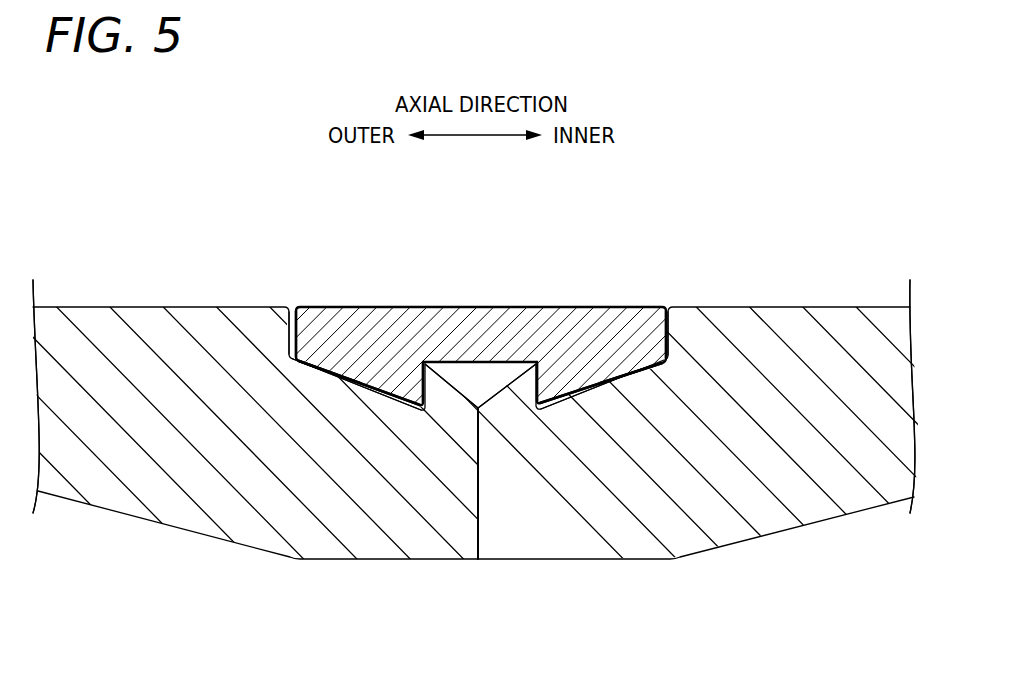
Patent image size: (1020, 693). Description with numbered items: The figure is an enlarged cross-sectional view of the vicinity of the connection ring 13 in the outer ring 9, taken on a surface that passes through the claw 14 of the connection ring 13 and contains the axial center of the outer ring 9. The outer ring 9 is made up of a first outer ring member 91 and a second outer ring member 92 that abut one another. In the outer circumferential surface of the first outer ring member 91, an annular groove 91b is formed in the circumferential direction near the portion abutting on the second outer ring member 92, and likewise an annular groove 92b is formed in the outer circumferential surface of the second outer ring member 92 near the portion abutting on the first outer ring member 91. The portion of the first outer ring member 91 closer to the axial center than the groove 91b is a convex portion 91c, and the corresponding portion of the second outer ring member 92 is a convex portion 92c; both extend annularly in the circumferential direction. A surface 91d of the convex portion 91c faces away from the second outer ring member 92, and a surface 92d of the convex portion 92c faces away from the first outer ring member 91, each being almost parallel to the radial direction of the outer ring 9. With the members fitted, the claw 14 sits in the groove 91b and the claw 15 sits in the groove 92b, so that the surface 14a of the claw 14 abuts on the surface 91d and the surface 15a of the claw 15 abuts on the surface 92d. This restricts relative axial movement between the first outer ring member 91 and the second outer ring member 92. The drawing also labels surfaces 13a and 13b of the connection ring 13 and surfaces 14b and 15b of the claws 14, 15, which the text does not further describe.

The outer ring 9 is at (855, 193).
The first outer ring member 91 is at (142, 503).
The groove 91b is at (383, 377).
The convex portion 91c is at (438, 362).
The surface 91d is at (404, 365).
The second outer ring member 92 is at (812, 503).
The groove 92b is at (620, 388).
The convex portion 92c is at (528, 362).
The surface 92d is at (553, 385).
The connection ring 13 is at (505, 307).
The outer side surface of seal member 13a is at (282, 307).
The inner side surface of seal member 13b is at (670, 318).
The claw 14 is at (362, 385).
The surface 14a is at (420, 392).
The inclined surface of first leg portion 14b is at (343, 380).
The claw 15 is at (582, 350).
The surface 15a is at (530, 396).
The inclined surface of second leg portion 15b is at (632, 371).